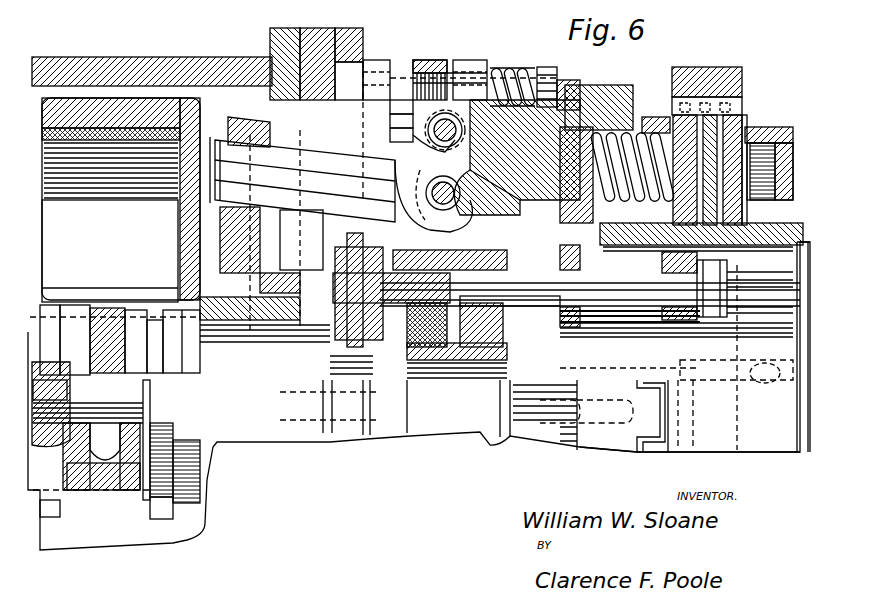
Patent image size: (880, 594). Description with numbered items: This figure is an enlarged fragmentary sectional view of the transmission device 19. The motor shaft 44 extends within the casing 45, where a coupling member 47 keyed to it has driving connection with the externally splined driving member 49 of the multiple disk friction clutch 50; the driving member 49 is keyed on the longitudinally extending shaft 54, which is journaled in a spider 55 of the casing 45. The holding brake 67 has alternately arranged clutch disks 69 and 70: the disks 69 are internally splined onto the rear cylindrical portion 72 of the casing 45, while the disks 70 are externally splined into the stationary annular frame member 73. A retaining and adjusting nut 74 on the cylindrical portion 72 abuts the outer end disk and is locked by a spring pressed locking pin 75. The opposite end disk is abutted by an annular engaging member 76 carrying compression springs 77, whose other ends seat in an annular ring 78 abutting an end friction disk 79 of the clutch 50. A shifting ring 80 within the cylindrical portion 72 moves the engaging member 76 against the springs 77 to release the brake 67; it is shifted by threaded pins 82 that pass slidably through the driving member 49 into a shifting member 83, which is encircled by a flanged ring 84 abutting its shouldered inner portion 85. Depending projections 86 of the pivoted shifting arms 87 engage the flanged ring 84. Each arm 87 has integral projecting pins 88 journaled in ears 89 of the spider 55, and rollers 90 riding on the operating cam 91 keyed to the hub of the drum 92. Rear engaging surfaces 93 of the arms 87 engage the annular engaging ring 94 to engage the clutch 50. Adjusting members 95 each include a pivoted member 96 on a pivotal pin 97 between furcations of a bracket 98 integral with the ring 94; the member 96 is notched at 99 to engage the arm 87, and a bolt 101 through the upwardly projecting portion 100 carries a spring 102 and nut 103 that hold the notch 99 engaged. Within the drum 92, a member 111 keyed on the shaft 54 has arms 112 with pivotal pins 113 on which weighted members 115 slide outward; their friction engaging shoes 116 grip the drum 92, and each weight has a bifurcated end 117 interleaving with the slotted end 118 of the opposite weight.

The transmission device 19 is at (150, 57).
The motor shaft 44 is at (765, 373).
The casing 45 is at (248, 62).
The coupling member 47 is at (705, 452).
The driving member 49 is at (600, 450).
The friction clutch 50 is at (547, 67).
The longitudinally extending shaft 54 is at (485, 430).
The spider 55 is at (366, 95).
The holding brake 67 is at (750, 125).
The clutch disks 69 is at (677, 118).
The clutch disks 70 is at (703, 67).
The rear cylindrical portion 72 is at (797, 242).
The stationary annular frame member 73 is at (735, 67).
The retaining and adjusting nut 74 is at (790, 127).
The spring pressed locking pin 75 is at (758, 127).
The annular engaging member 76 is at (656, 117).
The compression springs 77 is at (642, 115).
The annular ring 78 is at (600, 105).
The end friction disk 79 is at (580, 110).
The shifting ring 80 is at (656, 318).
The threaded pins 82 is at (612, 320).
The shifting member 83 is at (435, 350).
The flanged ring 84 is at (400, 236).
The shouldered inner portion 85 is at (395, 262).
The depending projections 86 is at (498, 282).
The shifting arms 87 is at (320, 150).
The projecting pins 88 is at (422, 139).
The ears 89 is at (367, 100).
The rollers 90 is at (268, 113).
The operating cam 91 is at (268, 205).
The drum 92 is at (170, 100).
The rear engaging surfaces 93 is at (511, 289).
The annular engaging ring 94 is at (518, 72).
The adjusting members 95 is at (462, 60).
The pivoted member 96 is at (490, 105).
The pivotal pin 97 is at (458, 115).
The bracket 98 is at (401, 117).
The notch 99 is at (401, 102).
The upwardly projecting portion 100 is at (430, 60).
The bolt 101 is at (447, 72).
The spring 102 is at (506, 82).
The nut 103 is at (560, 80).
The member 111 is at (52, 310).
The arms 112 is at (50, 450).
The pivotal pins 113 is at (165, 384).
The weighted members 115 is at (33, 224).
The friction engaging shoes 116 is at (36, 130).
The bifurcated end 117 is at (93, 465).
The end 118 is at (112, 310).